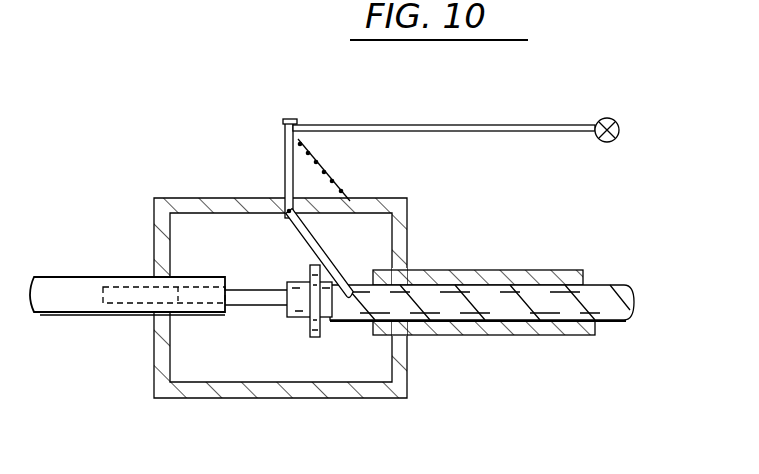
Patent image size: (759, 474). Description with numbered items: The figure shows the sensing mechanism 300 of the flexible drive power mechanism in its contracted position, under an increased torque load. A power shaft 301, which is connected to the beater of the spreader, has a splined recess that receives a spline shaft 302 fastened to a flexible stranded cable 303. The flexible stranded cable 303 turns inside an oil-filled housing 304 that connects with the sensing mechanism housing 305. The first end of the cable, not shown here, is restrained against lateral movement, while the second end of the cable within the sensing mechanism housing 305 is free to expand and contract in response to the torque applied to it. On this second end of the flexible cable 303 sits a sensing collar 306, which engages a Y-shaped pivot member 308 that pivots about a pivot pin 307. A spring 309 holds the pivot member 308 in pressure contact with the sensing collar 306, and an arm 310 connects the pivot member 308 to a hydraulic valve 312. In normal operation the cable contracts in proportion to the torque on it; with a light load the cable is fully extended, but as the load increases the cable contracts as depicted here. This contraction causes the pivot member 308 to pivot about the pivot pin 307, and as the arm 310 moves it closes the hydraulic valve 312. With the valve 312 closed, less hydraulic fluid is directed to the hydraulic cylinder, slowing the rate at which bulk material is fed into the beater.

The sensing mechanism 300 is at (221, 62).
The power shaft 301 is at (112, 277).
The spline shaft 302 is at (265, 303).
The flexible stranded cable 303 is at (618, 288).
The oil-filled housing 304 is at (472, 272).
The sensing mechanism housing 305 is at (188, 197).
The sensing collar 306 is at (318, 340).
The pivot pin 307 is at (286, 208).
The Y-shaped pivot member 308 is at (283, 138).
The spring 309 is at (318, 162).
The arm 310 is at (373, 125).
The hydraulic valve 312 is at (611, 118).